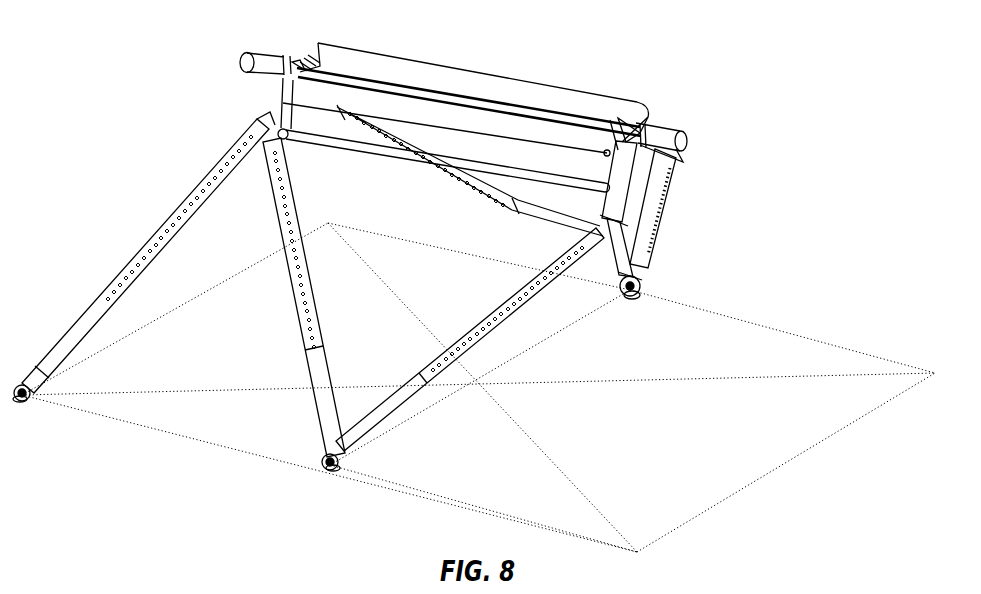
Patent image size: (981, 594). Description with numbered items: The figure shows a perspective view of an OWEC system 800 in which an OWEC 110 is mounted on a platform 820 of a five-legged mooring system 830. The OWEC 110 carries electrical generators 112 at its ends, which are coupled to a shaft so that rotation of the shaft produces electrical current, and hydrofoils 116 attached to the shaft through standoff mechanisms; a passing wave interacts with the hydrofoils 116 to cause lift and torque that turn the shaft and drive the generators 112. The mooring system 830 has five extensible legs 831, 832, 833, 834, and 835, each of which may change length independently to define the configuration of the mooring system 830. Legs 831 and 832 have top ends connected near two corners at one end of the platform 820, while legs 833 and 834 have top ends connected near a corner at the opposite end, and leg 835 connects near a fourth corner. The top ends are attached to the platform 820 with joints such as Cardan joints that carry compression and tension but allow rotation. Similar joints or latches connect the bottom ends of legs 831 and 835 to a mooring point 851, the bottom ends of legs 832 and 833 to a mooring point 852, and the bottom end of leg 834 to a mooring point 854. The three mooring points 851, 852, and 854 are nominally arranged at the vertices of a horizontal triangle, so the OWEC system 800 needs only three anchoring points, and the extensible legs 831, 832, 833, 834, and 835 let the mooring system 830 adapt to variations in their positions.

The OWEC system 800 is at (650, 44).
The OWEC 110 is at (464, 117).
The electrical generator 112 is at (271, 56).
The hydrofoil 116 is at (547, 92).
The platform 820 is at (373, 147).
The mooring system 830 is at (376, 317).
The extensible leg 831 is at (667, 213).
The extensible leg 832 is at (480, 317).
The extensible leg 833 is at (307, 317).
The extensible leg 834 is at (158, 243).
The extensible leg 835 is at (477, 190).
The mooring point 851 is at (643, 293).
The mooring point 852 is at (330, 473).
The mooring point 854 is at (25, 400).